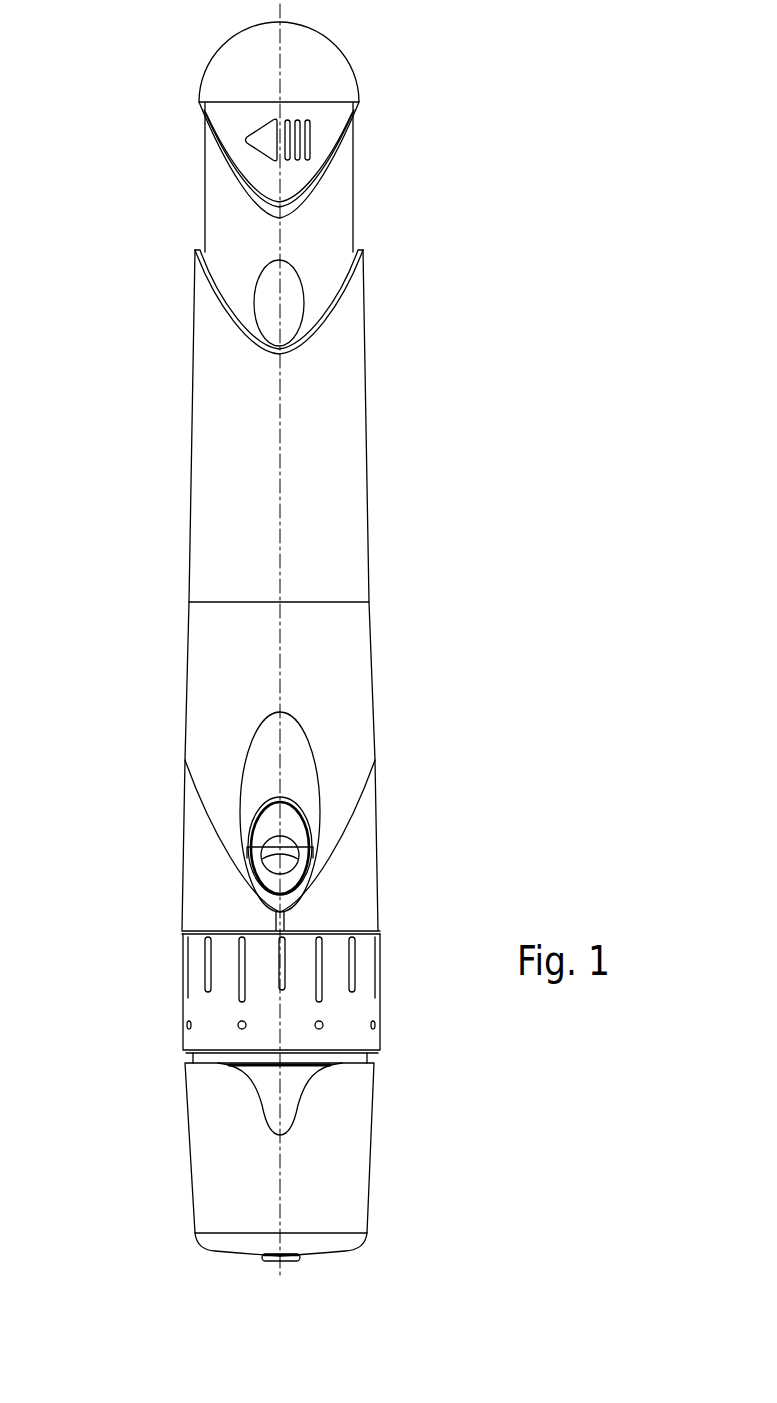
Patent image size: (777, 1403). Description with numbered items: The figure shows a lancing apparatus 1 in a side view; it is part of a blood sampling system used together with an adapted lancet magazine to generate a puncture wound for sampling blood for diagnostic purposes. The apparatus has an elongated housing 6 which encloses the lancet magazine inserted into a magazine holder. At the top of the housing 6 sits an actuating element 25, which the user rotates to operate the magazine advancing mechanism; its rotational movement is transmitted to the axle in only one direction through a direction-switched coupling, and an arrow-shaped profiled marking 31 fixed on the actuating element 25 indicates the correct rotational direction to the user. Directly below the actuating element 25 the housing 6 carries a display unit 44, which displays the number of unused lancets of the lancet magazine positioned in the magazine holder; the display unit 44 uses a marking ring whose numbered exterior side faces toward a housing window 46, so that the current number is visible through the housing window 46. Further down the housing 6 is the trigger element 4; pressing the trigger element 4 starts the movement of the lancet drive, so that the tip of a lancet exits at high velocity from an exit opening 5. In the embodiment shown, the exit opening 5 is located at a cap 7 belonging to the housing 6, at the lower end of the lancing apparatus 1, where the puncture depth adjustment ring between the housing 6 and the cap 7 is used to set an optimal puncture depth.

The lancing apparatus 1 is at (136, 547).
The actuating element 25 is at (345, 63).
The arrow-shaped profiled marking 31 is at (245, 135).
The display unit 44 is at (298, 276).
The housing window 46 is at (259, 278).
The housing 6 is at (380, 601).
The trigger element 4 is at (265, 828).
The cap 7 is at (355, 1127).
The exit opening 5 is at (265, 1268).